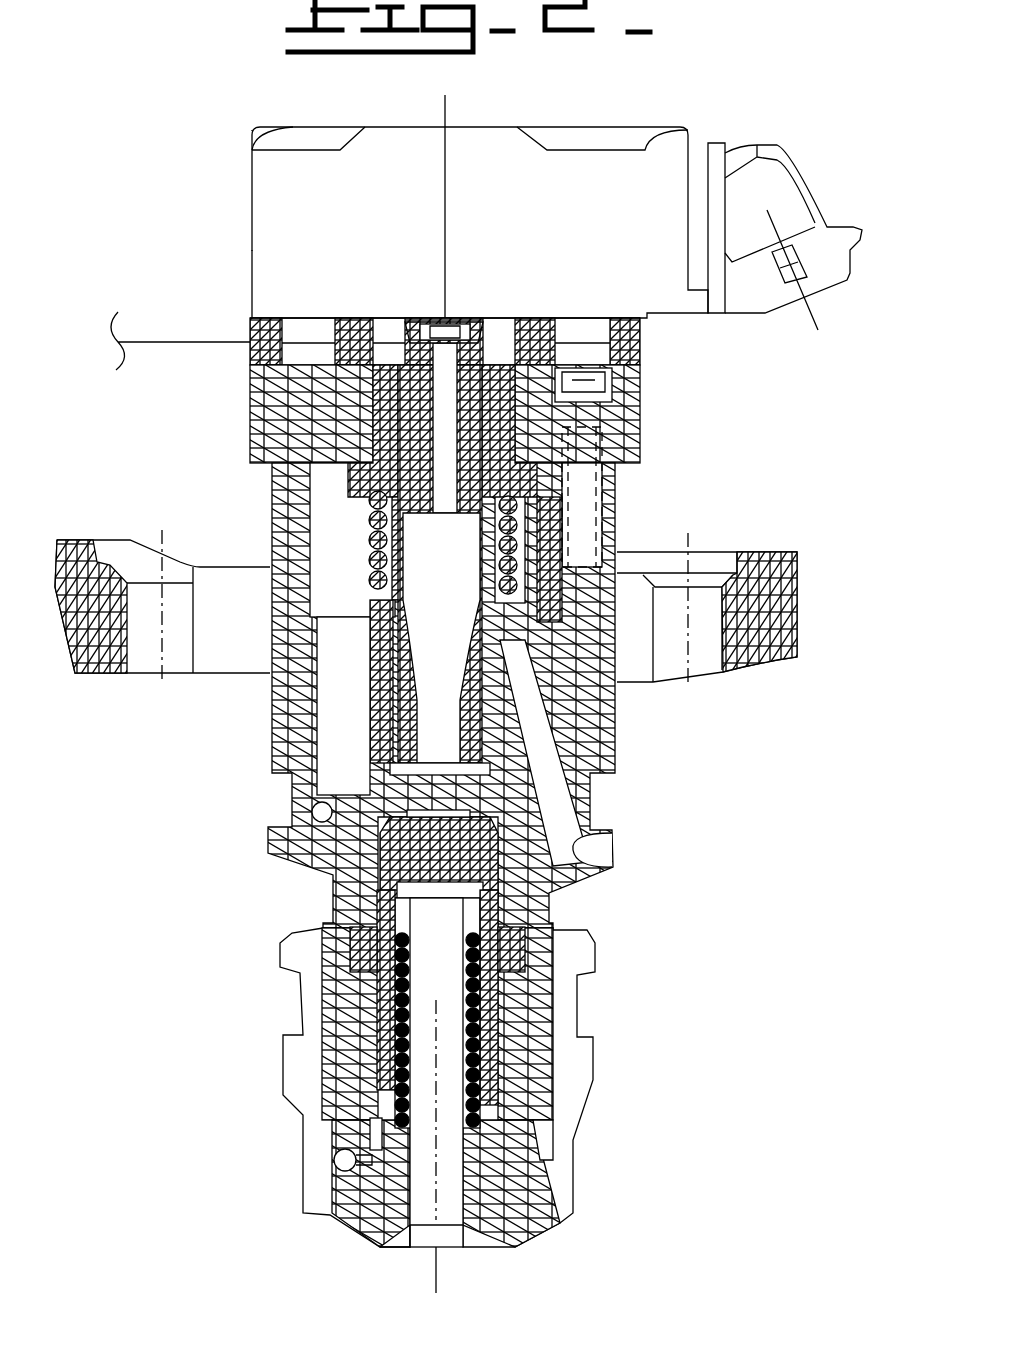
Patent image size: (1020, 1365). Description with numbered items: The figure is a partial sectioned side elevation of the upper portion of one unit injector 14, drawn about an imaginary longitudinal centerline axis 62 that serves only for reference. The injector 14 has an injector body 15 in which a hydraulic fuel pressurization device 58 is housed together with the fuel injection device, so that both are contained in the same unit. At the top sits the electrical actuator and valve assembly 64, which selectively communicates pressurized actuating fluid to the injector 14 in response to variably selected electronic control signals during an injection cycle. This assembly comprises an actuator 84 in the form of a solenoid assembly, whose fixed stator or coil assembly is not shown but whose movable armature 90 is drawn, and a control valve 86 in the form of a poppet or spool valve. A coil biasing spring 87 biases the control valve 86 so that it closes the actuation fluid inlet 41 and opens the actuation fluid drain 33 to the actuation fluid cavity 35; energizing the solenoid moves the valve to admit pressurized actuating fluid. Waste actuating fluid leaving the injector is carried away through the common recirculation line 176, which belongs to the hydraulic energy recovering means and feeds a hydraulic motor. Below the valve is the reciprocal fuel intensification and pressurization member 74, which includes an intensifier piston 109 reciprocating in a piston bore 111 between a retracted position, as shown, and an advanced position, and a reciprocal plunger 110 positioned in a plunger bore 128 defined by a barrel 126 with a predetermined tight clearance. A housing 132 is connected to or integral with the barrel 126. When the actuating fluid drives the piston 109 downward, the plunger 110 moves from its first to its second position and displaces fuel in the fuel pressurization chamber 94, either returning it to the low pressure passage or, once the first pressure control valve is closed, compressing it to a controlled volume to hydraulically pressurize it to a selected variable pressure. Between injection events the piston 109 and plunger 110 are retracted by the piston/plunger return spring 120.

The injector 14 is at (148, 114).
The longitudinal centerline axis 62 is at (447, 100).
The actuator 84 is at (245, 183).
The electrical actuator and valve assembly 64 is at (218, 253).
The movable armature 90 is at (532, 320).
The actuation fluid drain 33 is at (640, 447).
The common recirculation line 176 is at (190, 342).
The coil biasing spring 87 is at (368, 500).
The injector body 15 is at (268, 712).
The control valve 86 is at (500, 715).
The actuation fluid cavity 35 is at (318, 805).
The actuation fluid inlet 41 is at (600, 872).
The reciprocal fuel intensification and pressurization member 74 is at (548, 912).
The intensifier piston 109 is at (367, 898).
The hydraulic fuel pressurization device 58 is at (672, 1013).
The piston bore 111 is at (385, 1050).
The housing 132 is at (597, 1081).
The piston/plunger return spring 120 is at (395, 1117).
The reciprocal plunger 110 is at (456, 1199).
The barrel 126 is at (548, 1186).
The plunger bore 128 is at (447, 1232).
The fuel pressurization chamber 94 is at (427, 1238).